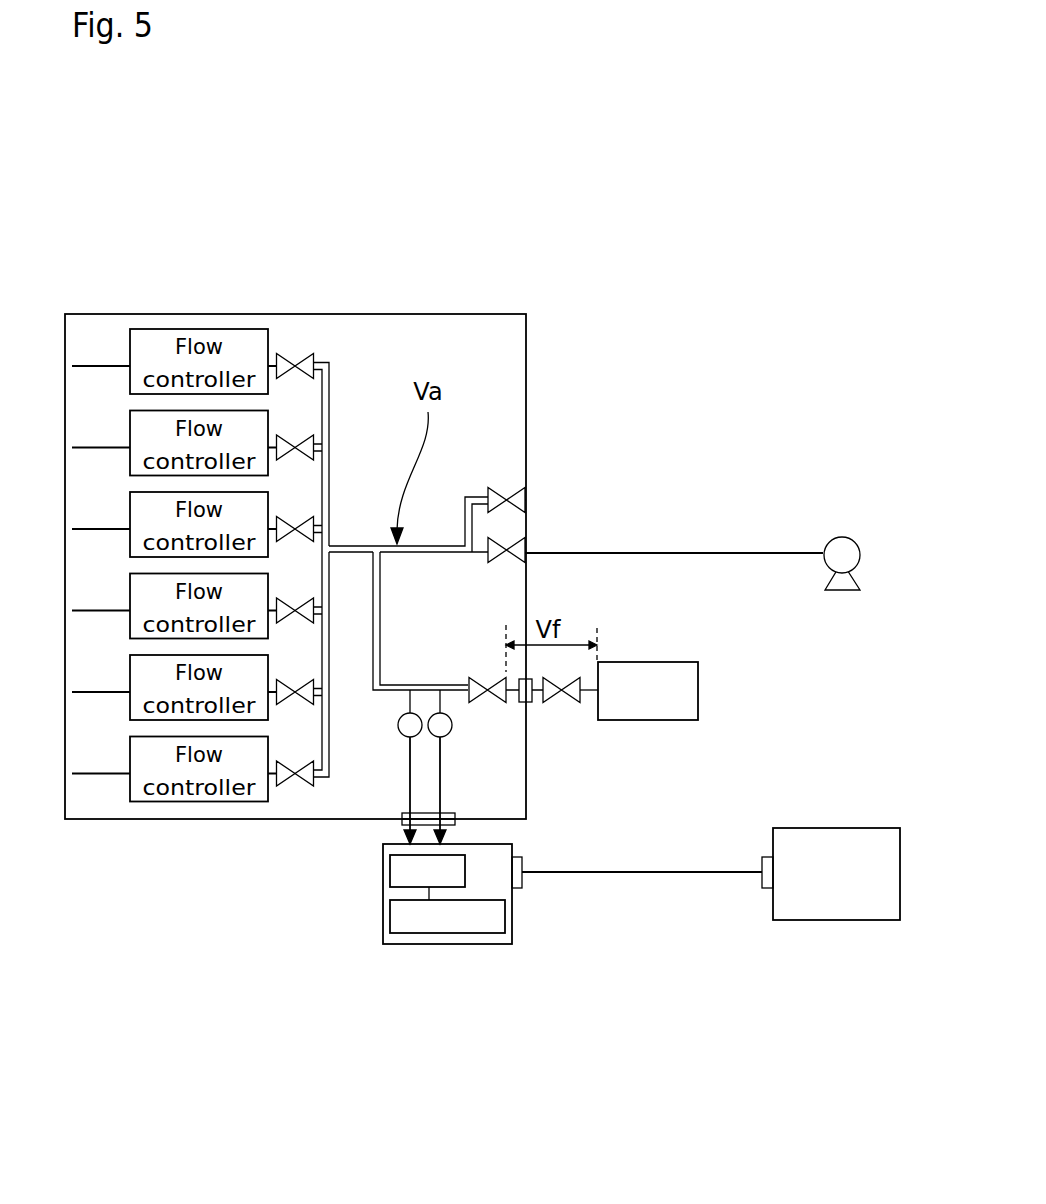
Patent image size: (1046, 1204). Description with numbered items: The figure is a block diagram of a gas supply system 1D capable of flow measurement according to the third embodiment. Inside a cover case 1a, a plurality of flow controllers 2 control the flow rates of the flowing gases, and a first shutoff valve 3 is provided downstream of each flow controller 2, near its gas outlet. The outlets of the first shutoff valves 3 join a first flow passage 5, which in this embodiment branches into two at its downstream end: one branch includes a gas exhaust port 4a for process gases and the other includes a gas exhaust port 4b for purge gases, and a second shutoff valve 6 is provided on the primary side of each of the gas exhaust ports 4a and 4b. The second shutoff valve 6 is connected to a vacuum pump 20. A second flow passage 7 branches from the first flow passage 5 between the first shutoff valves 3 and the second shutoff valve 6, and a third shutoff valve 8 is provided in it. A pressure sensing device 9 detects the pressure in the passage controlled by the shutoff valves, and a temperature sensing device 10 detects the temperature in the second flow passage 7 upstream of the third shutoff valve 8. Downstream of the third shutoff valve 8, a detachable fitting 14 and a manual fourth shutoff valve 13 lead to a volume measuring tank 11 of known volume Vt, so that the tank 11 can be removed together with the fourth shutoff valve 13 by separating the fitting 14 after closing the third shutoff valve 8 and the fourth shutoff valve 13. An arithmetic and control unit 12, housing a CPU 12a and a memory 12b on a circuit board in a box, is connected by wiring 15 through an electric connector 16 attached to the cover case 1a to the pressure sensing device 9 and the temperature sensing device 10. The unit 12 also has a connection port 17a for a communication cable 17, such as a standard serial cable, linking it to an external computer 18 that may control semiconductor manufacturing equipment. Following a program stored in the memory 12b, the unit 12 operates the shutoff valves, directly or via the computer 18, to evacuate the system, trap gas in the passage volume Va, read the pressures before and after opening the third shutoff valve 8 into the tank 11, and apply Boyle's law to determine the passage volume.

The gas supply system 1D is at (632, 234).
The cover case 1a is at (526, 368).
The flow controller 2 is at (175, 329).
The first shutoff valve 3 is at (290, 354).
The gas exhaust port for process gases 4a is at (526, 553).
The gas exhaust port for purge gases 4b is at (526, 505).
The first flow passage 5 is at (422, 545).
The second shutoff valve 6 is at (494, 490).
The second flow passage 7 is at (382, 608).
The third shutoff valve 8 is at (490, 690).
The pressure sensing device 9 is at (452, 725).
The temperature sensing device 10 is at (405, 737).
The volume measuring tank 11 is at (646, 720).
The arithmetic and control unit 12 is at (429, 953).
The CPU 12a is at (390, 885).
The memory 12b is at (505, 925).
The fourth shutoff valve 13 is at (575, 702).
The detachable fitting 14 is at (526, 702).
The wiring 15 is at (410, 782).
The electric connector 16 is at (398, 826).
The communication cable 17 is at (648, 872).
The connection port 17a is at (522, 884).
The external computer 18 is at (827, 920).
The vacuum pump 20 is at (842, 537).